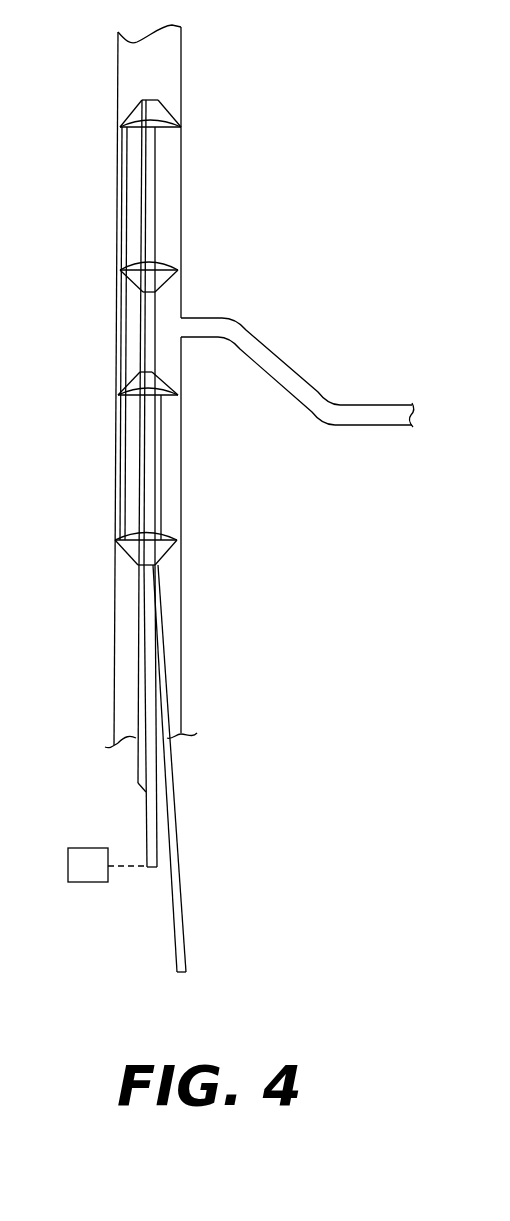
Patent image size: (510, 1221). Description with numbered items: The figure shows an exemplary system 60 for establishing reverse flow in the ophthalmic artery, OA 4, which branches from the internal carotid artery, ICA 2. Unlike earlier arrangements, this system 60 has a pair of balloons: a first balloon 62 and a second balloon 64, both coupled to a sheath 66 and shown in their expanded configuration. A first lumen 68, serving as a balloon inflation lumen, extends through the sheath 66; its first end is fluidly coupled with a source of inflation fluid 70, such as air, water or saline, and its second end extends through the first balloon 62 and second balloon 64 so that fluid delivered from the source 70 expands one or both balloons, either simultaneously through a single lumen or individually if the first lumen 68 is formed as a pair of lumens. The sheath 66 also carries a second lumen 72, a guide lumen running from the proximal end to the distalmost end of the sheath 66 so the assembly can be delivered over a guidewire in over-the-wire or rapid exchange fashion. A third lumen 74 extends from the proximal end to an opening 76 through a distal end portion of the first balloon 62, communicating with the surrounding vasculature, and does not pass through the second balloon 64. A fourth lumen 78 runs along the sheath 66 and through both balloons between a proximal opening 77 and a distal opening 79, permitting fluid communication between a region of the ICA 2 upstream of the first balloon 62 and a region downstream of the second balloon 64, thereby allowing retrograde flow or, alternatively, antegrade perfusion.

The system 60 is at (368, 195).
The ICA 2 is at (111, 629).
The OA 4 is at (269, 336).
The distal opening 79 is at (127, 122).
The second balloon 64 is at (197, 207).
The fourth lumen 78 is at (114, 335).
The opening 76 is at (166, 373).
The first balloon 62 is at (200, 468).
The proximal opening 77 is at (120, 557).
The second lumen 72 is at (137, 790).
The first lumen 68 is at (150, 871).
The source of inflation fluid 70 is at (107, 865).
The sheath 66 is at (170, 685).
The third lumen 74 is at (185, 891).